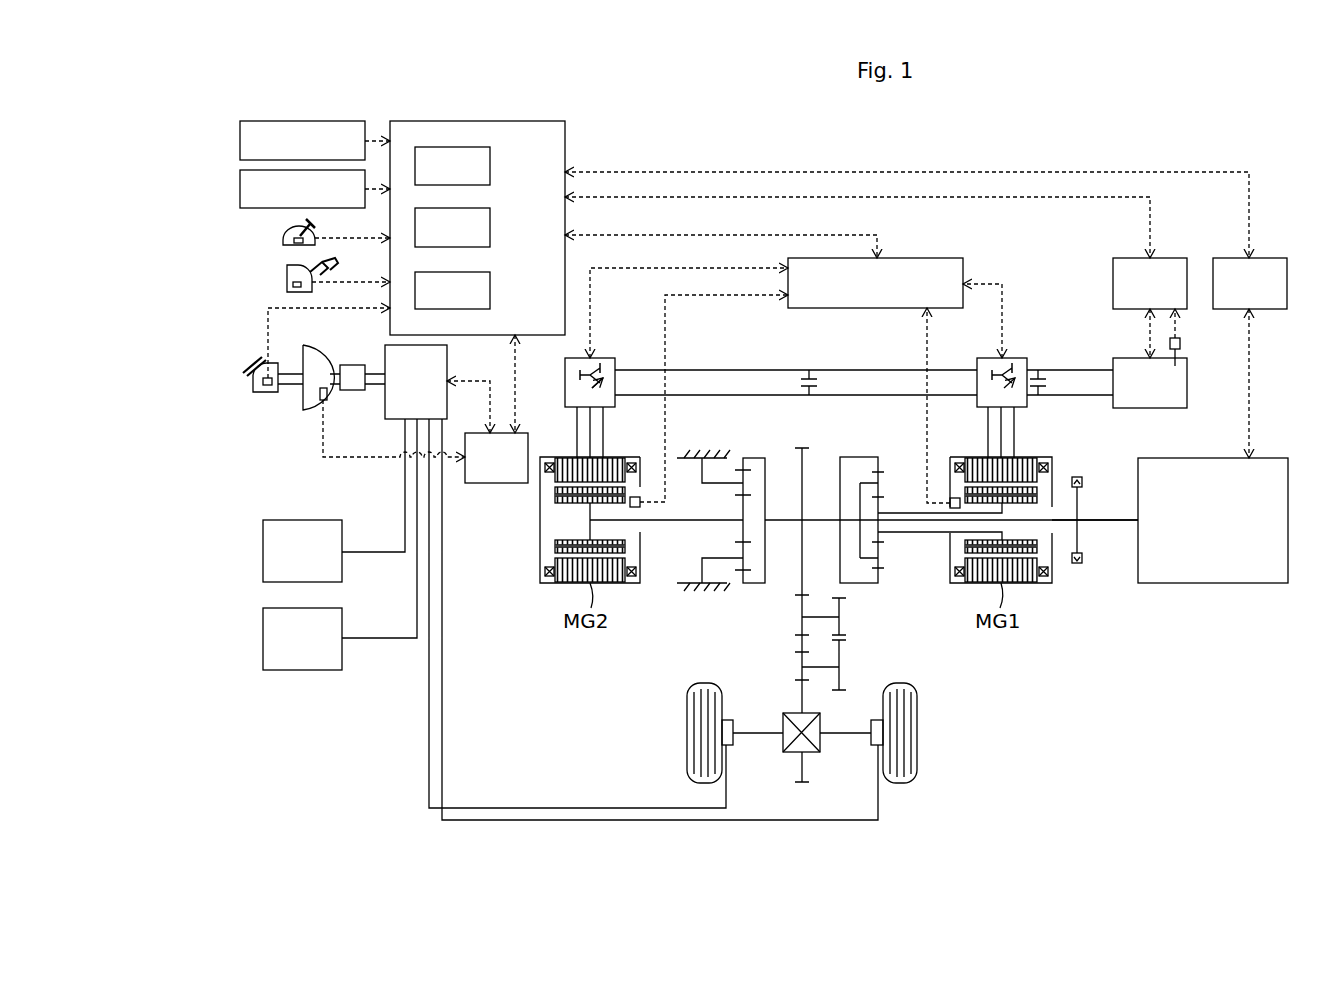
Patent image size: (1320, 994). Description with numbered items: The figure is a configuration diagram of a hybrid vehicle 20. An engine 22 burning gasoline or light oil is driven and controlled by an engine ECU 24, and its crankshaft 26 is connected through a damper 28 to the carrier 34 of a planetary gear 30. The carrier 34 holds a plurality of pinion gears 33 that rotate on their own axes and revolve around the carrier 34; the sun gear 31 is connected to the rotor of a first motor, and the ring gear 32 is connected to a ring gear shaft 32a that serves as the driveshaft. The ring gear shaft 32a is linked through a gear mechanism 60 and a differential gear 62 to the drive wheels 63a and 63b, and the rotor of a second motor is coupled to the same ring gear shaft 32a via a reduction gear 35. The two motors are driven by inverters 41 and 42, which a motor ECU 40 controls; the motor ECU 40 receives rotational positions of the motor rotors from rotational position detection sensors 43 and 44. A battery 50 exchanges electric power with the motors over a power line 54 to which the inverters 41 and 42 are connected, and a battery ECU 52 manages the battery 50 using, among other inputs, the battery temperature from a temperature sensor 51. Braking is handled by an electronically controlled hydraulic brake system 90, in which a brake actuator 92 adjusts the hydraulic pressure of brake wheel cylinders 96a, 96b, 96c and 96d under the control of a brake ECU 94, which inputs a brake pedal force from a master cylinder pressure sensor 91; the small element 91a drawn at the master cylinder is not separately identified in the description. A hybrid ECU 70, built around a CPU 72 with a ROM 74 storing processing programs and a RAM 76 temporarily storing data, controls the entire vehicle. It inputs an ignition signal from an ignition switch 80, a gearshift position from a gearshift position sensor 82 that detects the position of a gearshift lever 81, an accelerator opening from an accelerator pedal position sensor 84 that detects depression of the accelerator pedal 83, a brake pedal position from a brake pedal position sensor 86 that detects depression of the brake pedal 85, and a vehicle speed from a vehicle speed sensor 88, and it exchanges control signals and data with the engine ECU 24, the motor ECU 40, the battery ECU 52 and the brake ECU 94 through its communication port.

The hybrid vehicle 20 is at (1050, 140).
The engine 22 is at (1213, 583).
The engine electronic control unit 24 is at (1276, 258).
The crankshaft 26 is at (1100, 520).
The damper 28 is at (1077, 565).
The planetary gear 30 is at (921, 499).
The sun gear 31 is at (880, 535).
The ring gear 32 is at (880, 574).
The ring gear shaft 32a is at (820, 518).
The pinion gears 33 is at (880, 553).
The carrier 34 is at (860, 483).
The reduction gear 35 is at (748, 445).
The motor electronic control unit 40 is at (913, 258).
The inverter 41 is at (1010, 358).
The inverter 42 is at (606, 358).
The rotational position detection sensor 43 is at (955, 498).
The rotational position detection sensor 44 is at (640, 497).
The battery 50 is at (1151, 408).
The temperature sensor 51 is at (1181, 343).
The battery electronic control unit 52 is at (1176, 258).
The power line 54 is at (868, 394).
The gear mechanism 60 is at (858, 652).
The differential gear 62 is at (820, 740).
The drive wheel 63a is at (687, 733).
The drive wheel 63b is at (917, 733).
The hybrid electronic control unit 70 is at (478, 121).
The CPU 72 is at (490, 166).
The ROM 74 is at (490, 228).
The RAM 76 is at (490, 291).
The ignition switch 80 is at (240, 184).
The gearshift lever 81 is at (306, 224).
The gearshift position sensor 82 is at (285, 245).
The accelerator pedal 83 is at (318, 270).
The accelerator pedal position sensor 84 is at (287, 285).
The brake pedal 85 is at (250, 364).
The brake pedal position sensor 86 is at (255, 384).
The vehicle speed sensor 88 is at (240, 136).
The electronically controlled hydraulic brake system 90 is at (275, 418).
The master cylinder pressure sensor 91 is at (355, 365).
The master cylinder pressure sensor 91a is at (327, 399).
The brake actuator 92 is at (448, 351).
The brake electronic control unit 94 is at (498, 485).
The brake wheel cylinder 96a is at (726, 720).
The brake wheel cylinder 96b is at (878, 720).
The brake wheel cylinder 96c is at (302, 520).
The brake wheel cylinder 96d is at (302, 670).